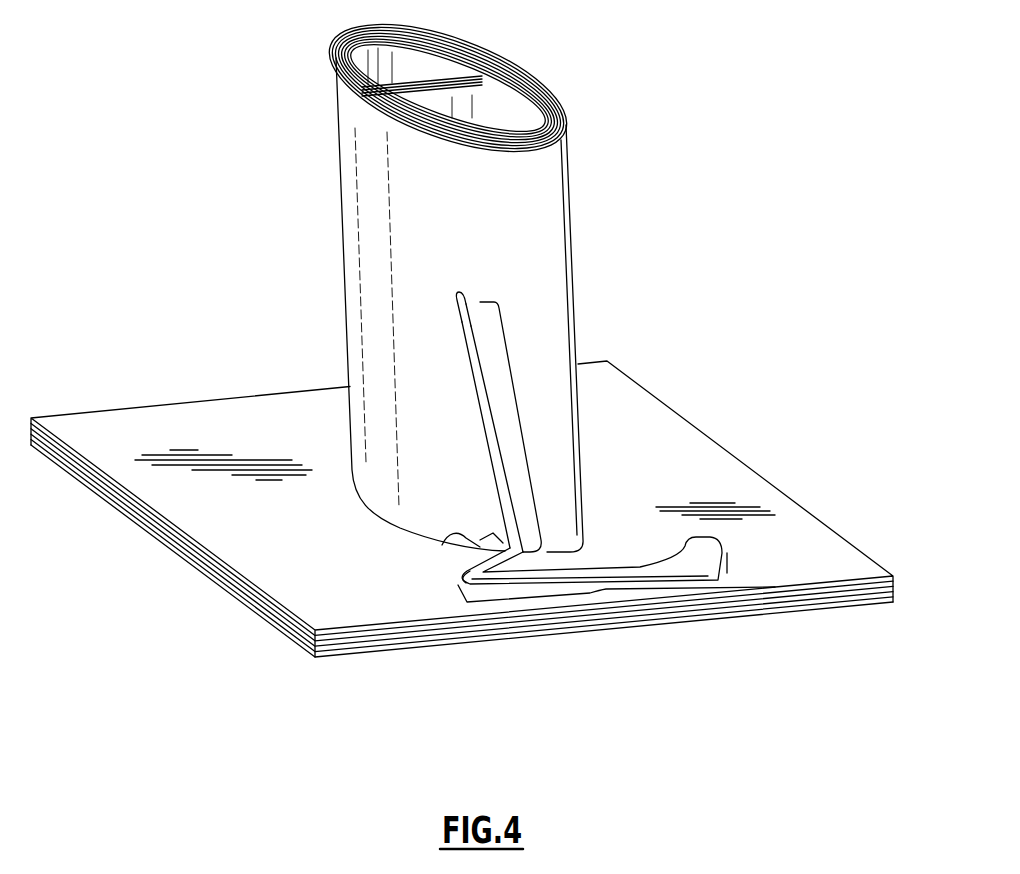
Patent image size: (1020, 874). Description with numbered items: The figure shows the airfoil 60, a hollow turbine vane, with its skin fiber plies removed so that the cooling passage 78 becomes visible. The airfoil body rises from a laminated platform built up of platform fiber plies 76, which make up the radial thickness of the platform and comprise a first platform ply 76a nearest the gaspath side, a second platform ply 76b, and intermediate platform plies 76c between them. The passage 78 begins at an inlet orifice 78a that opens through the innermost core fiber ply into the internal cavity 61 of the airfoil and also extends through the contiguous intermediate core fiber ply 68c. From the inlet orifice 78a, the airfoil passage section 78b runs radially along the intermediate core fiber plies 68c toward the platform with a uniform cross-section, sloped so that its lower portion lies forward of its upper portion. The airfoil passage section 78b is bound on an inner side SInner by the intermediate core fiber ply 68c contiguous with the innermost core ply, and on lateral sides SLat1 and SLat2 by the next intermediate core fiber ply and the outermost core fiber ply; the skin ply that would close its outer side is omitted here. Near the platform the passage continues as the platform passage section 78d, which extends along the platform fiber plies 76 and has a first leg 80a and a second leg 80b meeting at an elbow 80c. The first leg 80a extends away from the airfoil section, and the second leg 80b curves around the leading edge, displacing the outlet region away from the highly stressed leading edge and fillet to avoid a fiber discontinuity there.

The airfoil 60 is at (493, 358).
The internal cavity 61 is at (514, 122).
The intermediate core fiber ply 68c is at (533, 196).
The platform fiber plies 76 is at (493, 539).
The first platform ply 76a is at (298, 618).
The second platform ply 76b is at (340, 650).
The intermediate platform ply 76c is at (304, 648).
The passage 78 is at (497, 458).
The inlet orifice 78a is at (463, 300).
The airfoil passage section 78b is at (560, 415).
The platform passage section 78d is at (538, 594).
The first leg 80a is at (457, 534).
The second leg 80b is at (594, 591).
The elbow 80c is at (442, 582).
The lateral side SLat1 is at (470, 331).
The lateral side SLat2 is at (460, 319).
The inner side SInner is at (505, 486).